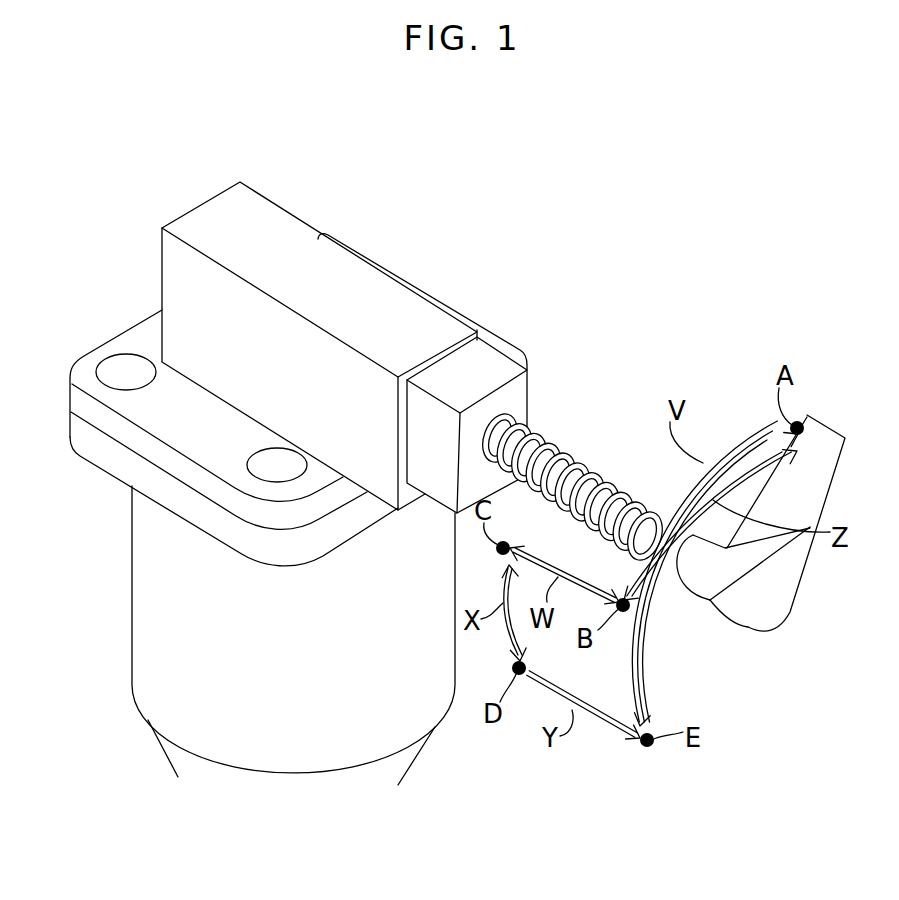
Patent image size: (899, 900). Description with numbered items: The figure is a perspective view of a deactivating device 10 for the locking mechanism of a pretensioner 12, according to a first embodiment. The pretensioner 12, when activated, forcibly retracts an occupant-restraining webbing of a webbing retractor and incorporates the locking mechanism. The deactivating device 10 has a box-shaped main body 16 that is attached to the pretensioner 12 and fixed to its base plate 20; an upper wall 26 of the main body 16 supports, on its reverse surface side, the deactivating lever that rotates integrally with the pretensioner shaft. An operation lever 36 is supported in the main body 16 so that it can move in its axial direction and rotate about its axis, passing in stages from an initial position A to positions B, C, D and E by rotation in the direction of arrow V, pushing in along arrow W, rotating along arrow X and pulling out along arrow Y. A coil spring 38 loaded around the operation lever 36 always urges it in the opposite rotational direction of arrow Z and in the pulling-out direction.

The deactivating device 10 is at (455, 276).
The pretensioner 12 is at (128, 549).
The main body 16 is at (186, 297).
The base plate 20 is at (83, 398).
The upper wall 26 is at (212, 230).
The operation lever 36 is at (690, 594).
The coil spring 38 is at (586, 445).